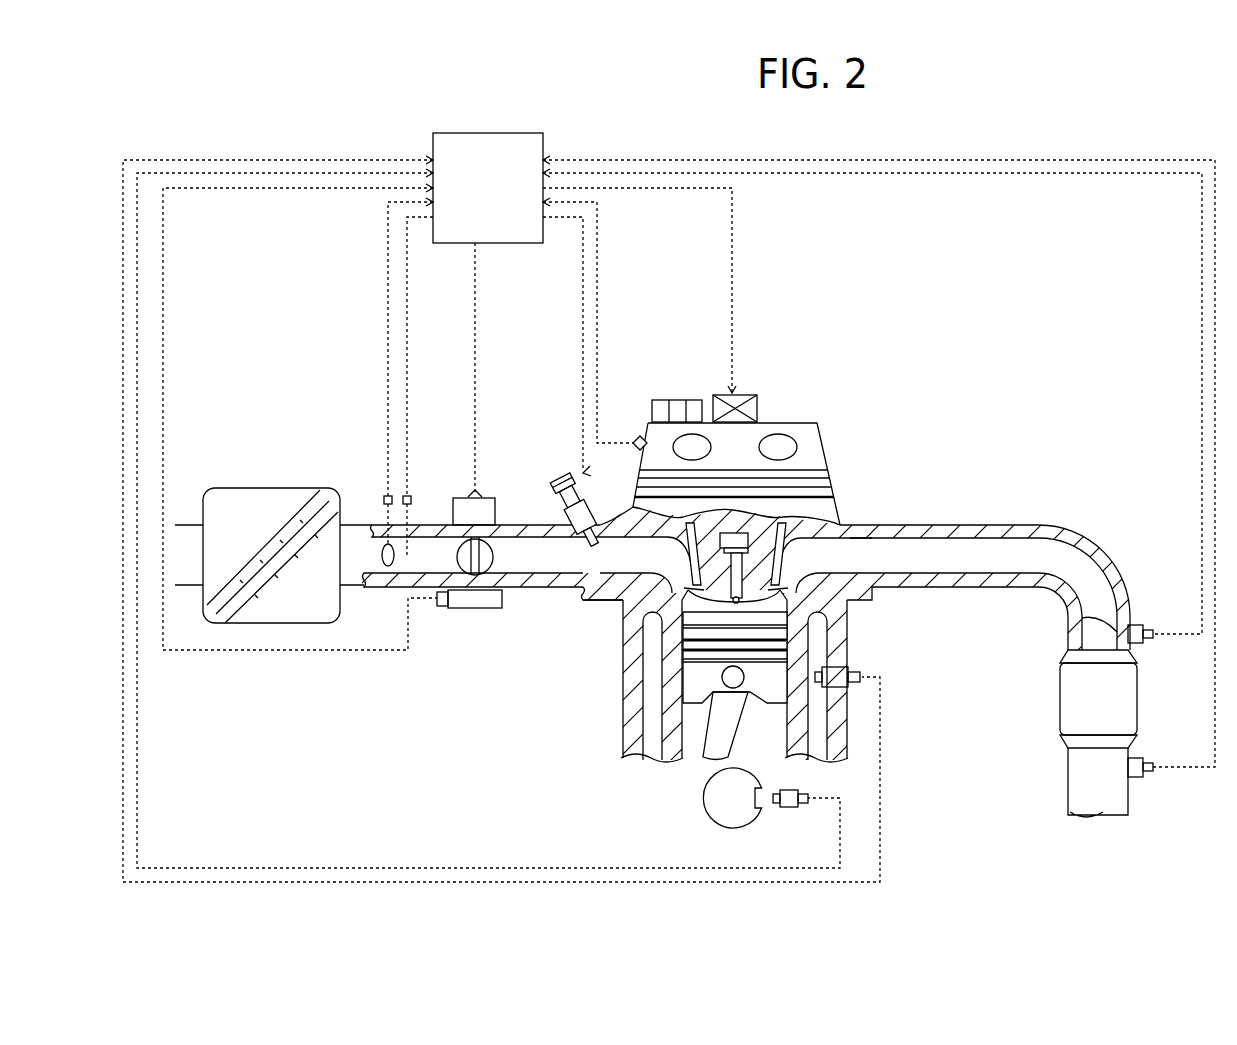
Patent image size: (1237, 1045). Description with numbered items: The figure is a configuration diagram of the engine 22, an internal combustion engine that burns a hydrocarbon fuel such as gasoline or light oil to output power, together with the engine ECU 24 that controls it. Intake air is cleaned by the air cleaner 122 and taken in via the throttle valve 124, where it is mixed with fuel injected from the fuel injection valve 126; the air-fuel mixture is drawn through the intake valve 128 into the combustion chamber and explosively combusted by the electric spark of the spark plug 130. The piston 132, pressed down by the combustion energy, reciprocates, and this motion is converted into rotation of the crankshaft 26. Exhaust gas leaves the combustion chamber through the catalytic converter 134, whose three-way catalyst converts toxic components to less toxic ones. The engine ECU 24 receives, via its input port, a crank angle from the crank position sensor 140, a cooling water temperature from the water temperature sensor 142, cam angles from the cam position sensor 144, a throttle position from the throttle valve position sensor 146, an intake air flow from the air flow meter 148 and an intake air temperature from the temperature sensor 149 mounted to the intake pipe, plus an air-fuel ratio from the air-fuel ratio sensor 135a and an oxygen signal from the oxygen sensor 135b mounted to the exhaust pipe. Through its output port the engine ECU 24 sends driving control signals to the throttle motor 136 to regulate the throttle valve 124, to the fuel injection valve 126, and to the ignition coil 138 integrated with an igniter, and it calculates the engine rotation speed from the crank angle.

The engine 22 is at (830, 344).
The engine electronic control unit 24 is at (513, 128).
The crankshaft 26 is at (701, 797).
The air cleaner 122 is at (275, 487).
The throttle valve 124 is at (497, 535).
The fuel injection valve 126 is at (550, 472).
The intake valve 128 is at (686, 572).
The spark plug 130 is at (790, 558).
The piston 132 is at (695, 678).
The catalytic converter 134 is at (1058, 696).
The air-fuel ratio sensor 135a is at (1135, 625).
The oxygen sensor 135b is at (1136, 779).
The throttle motor 136 is at (461, 492).
The ignition coil 138 is at (740, 392).
The crank position sensor 140 is at (790, 810).
The water temperature sensor 142 is at (843, 667).
The cam position sensor 144 is at (639, 434).
The throttle valve position sensor 146 is at (478, 612).
The air flow meter 148 is at (384, 499).
The temperature sensor 149 is at (430, 484).